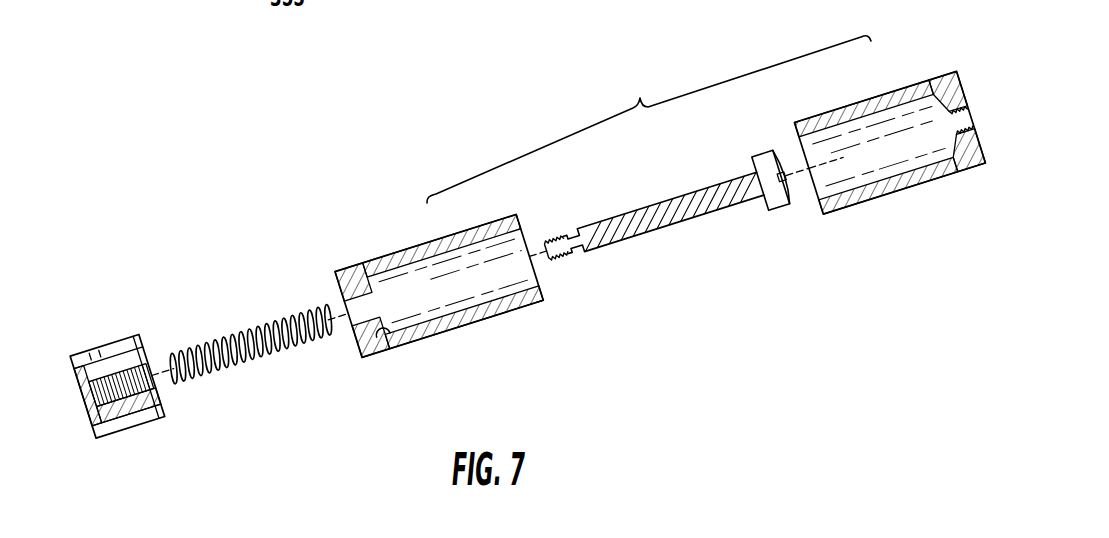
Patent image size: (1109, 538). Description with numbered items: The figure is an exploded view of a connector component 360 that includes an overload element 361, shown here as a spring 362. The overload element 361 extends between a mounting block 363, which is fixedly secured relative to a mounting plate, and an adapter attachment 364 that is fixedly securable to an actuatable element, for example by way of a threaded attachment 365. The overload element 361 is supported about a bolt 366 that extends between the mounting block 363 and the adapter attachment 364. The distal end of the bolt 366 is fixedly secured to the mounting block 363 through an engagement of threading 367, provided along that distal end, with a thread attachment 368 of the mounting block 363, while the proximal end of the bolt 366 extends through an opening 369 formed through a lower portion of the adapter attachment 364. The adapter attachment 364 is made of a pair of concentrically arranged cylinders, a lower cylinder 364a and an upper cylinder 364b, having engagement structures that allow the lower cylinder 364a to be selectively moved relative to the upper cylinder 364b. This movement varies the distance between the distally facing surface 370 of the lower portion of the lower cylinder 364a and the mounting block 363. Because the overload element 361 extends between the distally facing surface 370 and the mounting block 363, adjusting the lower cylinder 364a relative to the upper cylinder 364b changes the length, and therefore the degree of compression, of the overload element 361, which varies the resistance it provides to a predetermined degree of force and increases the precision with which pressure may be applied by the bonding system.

The connector component 360 is at (298, 185).
The overload element 361 is at (302, 376).
The spring 362 is at (221, 370).
The mounting block 363 is at (98, 310).
The adapter attachment 364 is at (649, 119).
The lower cylinder 364a is at (484, 344).
The upper cylinder 364b is at (894, 215).
The threaded attachment 365 is at (966, 110).
The bolt 366 is at (692, 244).
The threading 367 is at (567, 252).
The thread attachment 368 is at (150, 376).
The opening 369 is at (390, 334).
The distally facing surface 370 is at (340, 283).